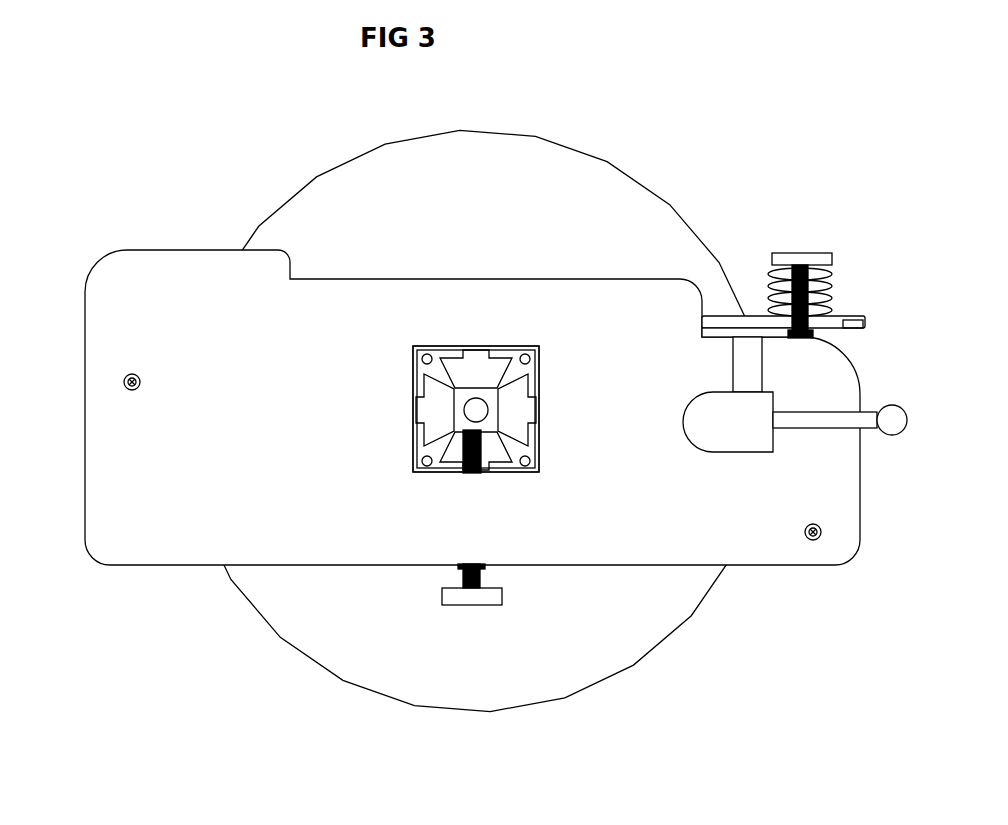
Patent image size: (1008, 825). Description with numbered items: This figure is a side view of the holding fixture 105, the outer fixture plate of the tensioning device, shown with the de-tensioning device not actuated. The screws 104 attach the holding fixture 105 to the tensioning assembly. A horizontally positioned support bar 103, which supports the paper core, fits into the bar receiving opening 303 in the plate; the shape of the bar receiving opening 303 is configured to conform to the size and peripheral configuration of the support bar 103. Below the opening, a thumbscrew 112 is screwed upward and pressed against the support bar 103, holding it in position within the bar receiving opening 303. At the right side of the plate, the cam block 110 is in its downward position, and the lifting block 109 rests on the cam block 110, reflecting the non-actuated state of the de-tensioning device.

The support bar 103 is at (525, 458).
The screws 104 is at (127, 387).
The holding fixture 105 is at (127, 252).
The lifting block 109 is at (762, 353).
The cam block 110 is at (773, 433).
The thumbscrew 112 is at (502, 600).
The bar receiving opening 303 is at (412, 412).